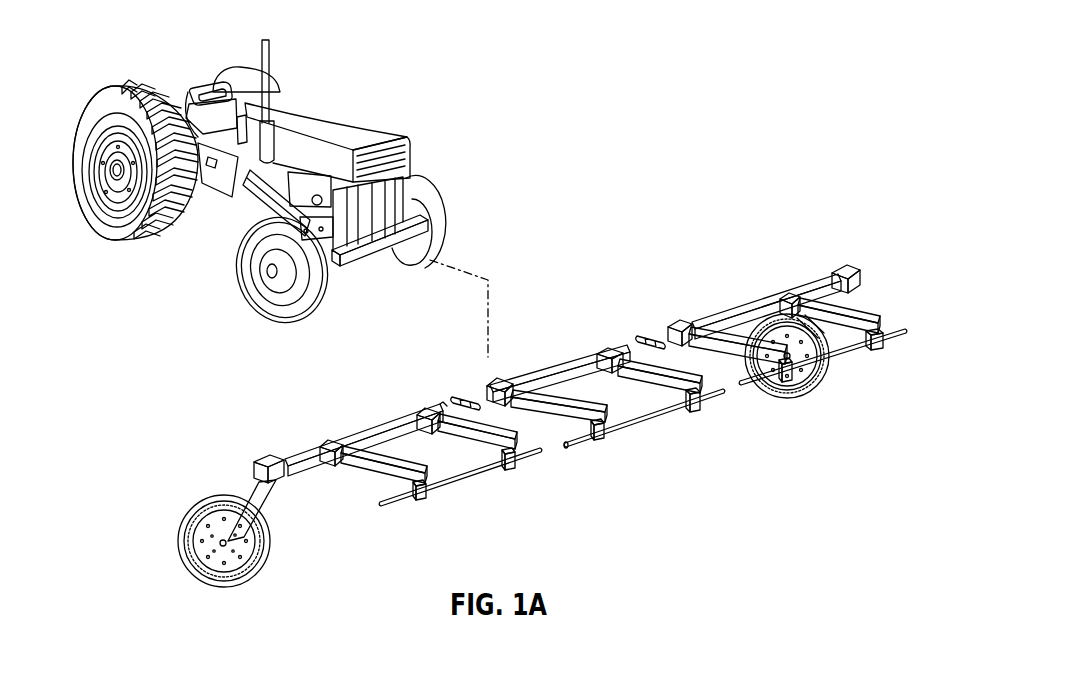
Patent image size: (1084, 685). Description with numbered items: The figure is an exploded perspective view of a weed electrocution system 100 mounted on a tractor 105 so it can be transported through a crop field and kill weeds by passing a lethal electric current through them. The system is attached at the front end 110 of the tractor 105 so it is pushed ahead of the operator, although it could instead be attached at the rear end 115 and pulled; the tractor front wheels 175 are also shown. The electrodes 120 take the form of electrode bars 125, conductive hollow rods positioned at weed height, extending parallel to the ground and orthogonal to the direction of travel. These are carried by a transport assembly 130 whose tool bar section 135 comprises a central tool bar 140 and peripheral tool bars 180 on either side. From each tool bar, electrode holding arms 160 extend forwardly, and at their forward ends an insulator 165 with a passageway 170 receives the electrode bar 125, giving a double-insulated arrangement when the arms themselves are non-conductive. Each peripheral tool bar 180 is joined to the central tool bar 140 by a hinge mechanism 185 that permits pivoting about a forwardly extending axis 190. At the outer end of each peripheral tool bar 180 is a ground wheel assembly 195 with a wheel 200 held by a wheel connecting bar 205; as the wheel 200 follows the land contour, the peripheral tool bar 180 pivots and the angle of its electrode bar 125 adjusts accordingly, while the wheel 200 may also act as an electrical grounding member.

The weed electrocution system 100 is at (742, 132).
The tractor 105 is at (427, 92).
The front end 110 is at (456, 157).
The rear end 115 is at (156, 52).
The electrodes 120 is at (931, 306).
The electrode bar 125 is at (475, 479).
The transport assembly 130 is at (772, 228).
The tool bar section 135 is at (360, 388).
The central tool bar 140 is at (553, 360).
The electrode holding arm 160 is at (384, 467).
The insulator 165 is at (417, 498).
The passageway 170 is at (590, 446).
The tractor front wheels 175 is at (436, 199).
The peripheral tool bar 180 is at (305, 445).
The hinge mechanism 185 is at (465, 384).
The forwardly extending axis 190 is at (446, 402).
The ground wheel assembly 195 is at (200, 460).
The wheel 200 is at (192, 572).
The wheel connecting bar 205 is at (267, 500).